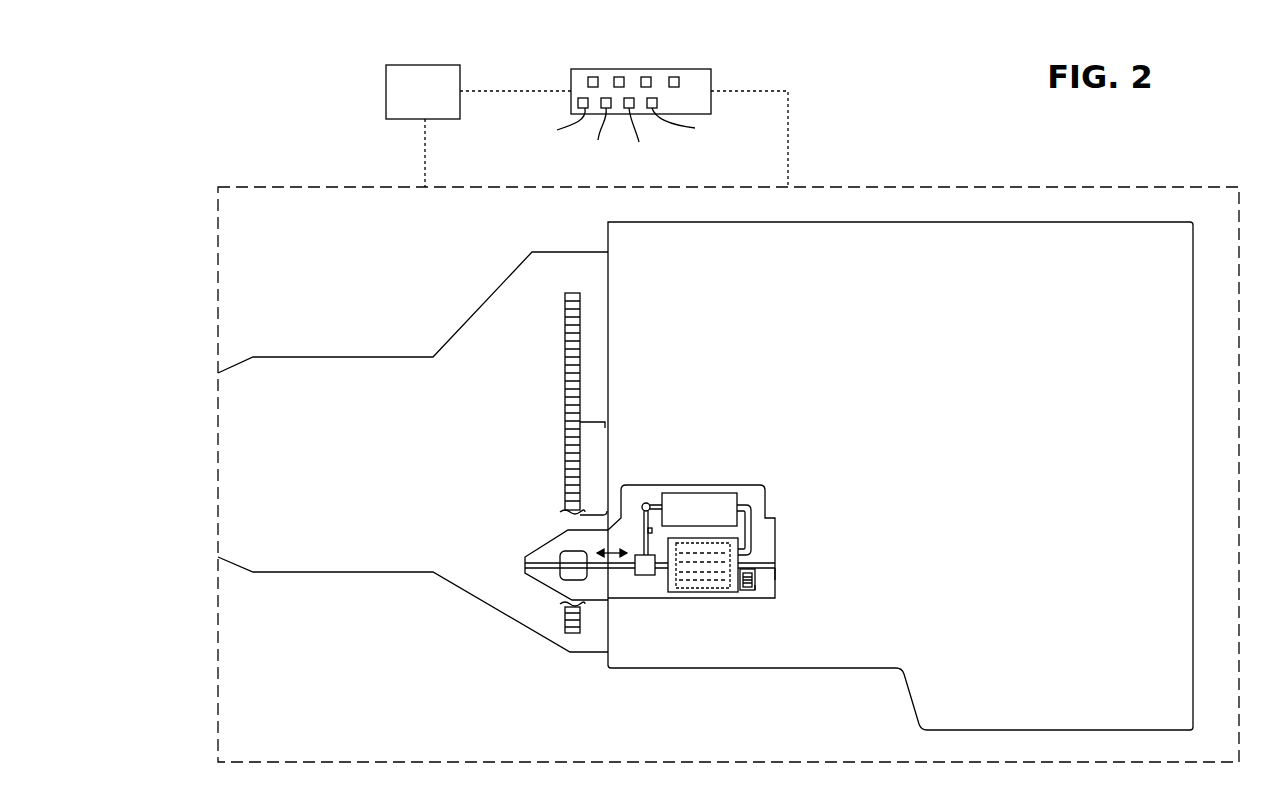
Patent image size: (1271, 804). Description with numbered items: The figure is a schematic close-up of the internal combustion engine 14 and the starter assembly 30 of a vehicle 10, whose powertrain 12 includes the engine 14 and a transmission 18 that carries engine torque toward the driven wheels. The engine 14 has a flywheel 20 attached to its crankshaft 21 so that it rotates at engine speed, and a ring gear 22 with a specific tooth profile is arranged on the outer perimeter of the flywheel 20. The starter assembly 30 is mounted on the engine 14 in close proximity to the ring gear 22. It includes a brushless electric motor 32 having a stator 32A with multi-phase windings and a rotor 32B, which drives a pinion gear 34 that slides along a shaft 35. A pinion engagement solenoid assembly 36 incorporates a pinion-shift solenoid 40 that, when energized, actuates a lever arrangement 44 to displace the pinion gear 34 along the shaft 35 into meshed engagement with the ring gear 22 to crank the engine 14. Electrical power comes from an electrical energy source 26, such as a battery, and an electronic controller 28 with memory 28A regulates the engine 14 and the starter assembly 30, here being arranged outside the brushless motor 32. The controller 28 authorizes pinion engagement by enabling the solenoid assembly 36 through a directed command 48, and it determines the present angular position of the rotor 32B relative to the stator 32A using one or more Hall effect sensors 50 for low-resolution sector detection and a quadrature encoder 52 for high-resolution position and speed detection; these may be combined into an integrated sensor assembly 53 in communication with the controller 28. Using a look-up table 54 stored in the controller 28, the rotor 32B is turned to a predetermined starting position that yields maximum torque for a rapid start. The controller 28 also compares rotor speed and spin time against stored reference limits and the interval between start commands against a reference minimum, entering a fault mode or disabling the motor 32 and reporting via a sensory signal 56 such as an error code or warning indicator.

The vehicle 10 is at (1212, 168).
The powertrain 12 is at (900, 440).
The internal combustion engine 14 is at (900, 476).
The transmission 18 is at (357, 351).
The flywheel 20 is at (551, 463).
The crankshaft 21 is at (590, 437).
The ring gear 22 is at (570, 397).
The electrical energy source 26 is at (478, 126).
The electronic controller 28 is at (657, 105).
The memory 28A is at (674, 76).
The starter assembly 30 is at (735, 538).
The brushless electric motor 32 is at (710, 581).
The stator 32A is at (685, 597).
The rotor 32B is at (672, 570).
The pinion gear 34 is at (572, 555).
The shaft 35 is at (612, 568).
The pinion engagement solenoid assembly 36 is at (712, 482).
The pinion-shift solenoid 40 is at (692, 500).
The lever arrangement 44 is at (642, 504).
The directed command 48 is at (646, 76).
The Hall effect sensor 50 is at (746, 590).
The quadrature encoder 52 is at (775, 573).
The integrated sensor assembly 53 is at (764, 587).
The look-up table 54 is at (617, 76).
The sensory signal 56 is at (591, 76).